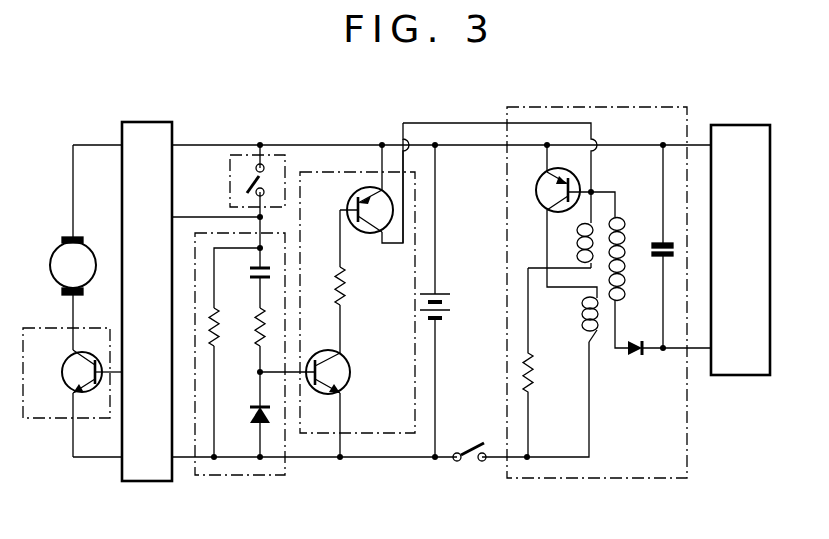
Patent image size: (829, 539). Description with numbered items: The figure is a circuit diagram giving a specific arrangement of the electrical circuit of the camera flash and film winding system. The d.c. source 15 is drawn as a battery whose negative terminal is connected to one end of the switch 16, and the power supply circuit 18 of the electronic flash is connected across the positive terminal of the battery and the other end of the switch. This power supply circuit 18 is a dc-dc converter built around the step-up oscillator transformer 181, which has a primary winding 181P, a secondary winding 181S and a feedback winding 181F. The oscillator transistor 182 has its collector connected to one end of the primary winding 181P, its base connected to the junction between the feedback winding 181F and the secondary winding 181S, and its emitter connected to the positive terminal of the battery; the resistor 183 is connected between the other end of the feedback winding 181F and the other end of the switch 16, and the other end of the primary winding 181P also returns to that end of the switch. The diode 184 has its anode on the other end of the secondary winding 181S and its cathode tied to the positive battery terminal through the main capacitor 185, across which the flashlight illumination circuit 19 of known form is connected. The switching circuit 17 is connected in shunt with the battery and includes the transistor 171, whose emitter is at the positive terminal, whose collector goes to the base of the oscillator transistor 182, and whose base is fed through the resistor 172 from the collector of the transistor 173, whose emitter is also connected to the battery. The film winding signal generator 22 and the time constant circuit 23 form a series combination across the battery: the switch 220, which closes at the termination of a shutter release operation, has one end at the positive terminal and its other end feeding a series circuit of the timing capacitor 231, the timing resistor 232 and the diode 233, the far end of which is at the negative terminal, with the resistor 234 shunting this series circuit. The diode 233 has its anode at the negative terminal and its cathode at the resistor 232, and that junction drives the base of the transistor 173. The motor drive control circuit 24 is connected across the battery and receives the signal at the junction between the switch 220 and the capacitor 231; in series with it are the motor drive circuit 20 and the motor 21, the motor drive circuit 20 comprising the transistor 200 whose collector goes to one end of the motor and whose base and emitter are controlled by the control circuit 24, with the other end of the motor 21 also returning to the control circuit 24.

The d.c. source 15 is at (444, 307).
The switch 16 is at (470, 450).
The switching circuit 17 is at (365, 437).
The power supply circuit 18 is at (686, 456).
The flashlight illumination circuit 19 is at (742, 375).
The motor drive circuit 20 is at (55, 418).
The motor 21 is at (50, 266).
The film winding signal generator 22 is at (282, 154).
The time constant circuit 23 is at (236, 475).
The motor drive control circuit 24 is at (126, 199).
The transistor 171 is at (353, 200).
The resistor 172 is at (346, 283).
The transistor 173 is at (338, 367).
The step-up oscillator transformer 181 is at (600, 341).
The feedback winding 181F is at (585, 252).
The primary winding 181P is at (582, 315).
The secondary winding 181S is at (624, 294).
The oscillator transistor 182 is at (545, 197).
The resistor 183 is at (533, 365).
The diode 184 is at (638, 355).
The main capacitor 185 is at (652, 247).
The transistor 200 is at (68, 364).
The switch 220 is at (246, 182).
The timing capacitor 231 is at (254, 275).
The timing resistor 232 is at (257, 340).
The diode 233 is at (250, 414).
The resistor 234 is at (211, 342).